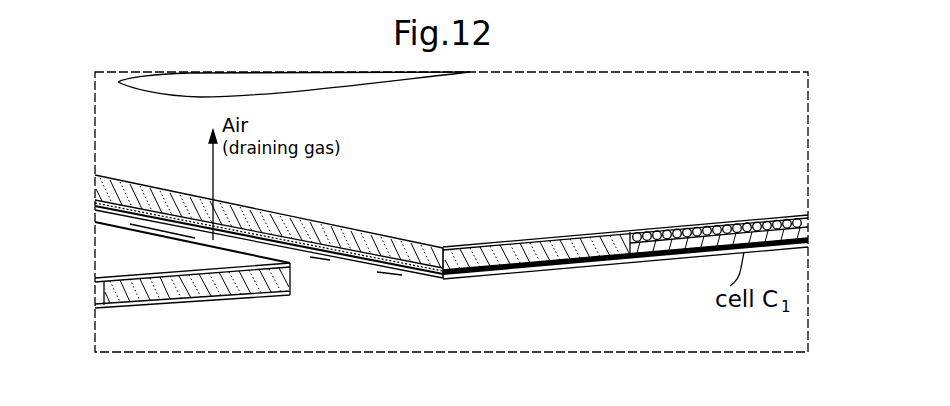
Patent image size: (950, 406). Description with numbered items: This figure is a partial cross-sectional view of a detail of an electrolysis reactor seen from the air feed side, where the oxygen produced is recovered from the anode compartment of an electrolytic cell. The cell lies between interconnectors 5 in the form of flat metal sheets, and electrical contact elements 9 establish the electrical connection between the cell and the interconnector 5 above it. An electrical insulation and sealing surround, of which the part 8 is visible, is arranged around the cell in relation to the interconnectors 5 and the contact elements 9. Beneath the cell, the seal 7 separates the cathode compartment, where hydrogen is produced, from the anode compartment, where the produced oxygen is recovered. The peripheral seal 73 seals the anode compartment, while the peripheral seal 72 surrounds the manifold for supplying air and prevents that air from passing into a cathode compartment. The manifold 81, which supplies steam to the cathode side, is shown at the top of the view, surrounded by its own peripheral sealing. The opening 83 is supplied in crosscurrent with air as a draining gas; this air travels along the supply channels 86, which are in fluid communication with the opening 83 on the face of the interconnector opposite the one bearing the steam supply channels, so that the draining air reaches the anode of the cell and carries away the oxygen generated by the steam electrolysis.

The interconnector 5 is at (454, 163).
The seal 7 is at (668, 256).
The part of the electrical insulation and sealing surround 8 is at (469, 272).
The electrical contact elements 9 is at (727, 222).
The peripheral seal 72 is at (107, 268).
The peripheral seal 73 is at (208, 303).
The manifold 81 is at (204, 85).
The opening 83 is at (342, 280).
The supply channels 86 is at (223, 233).